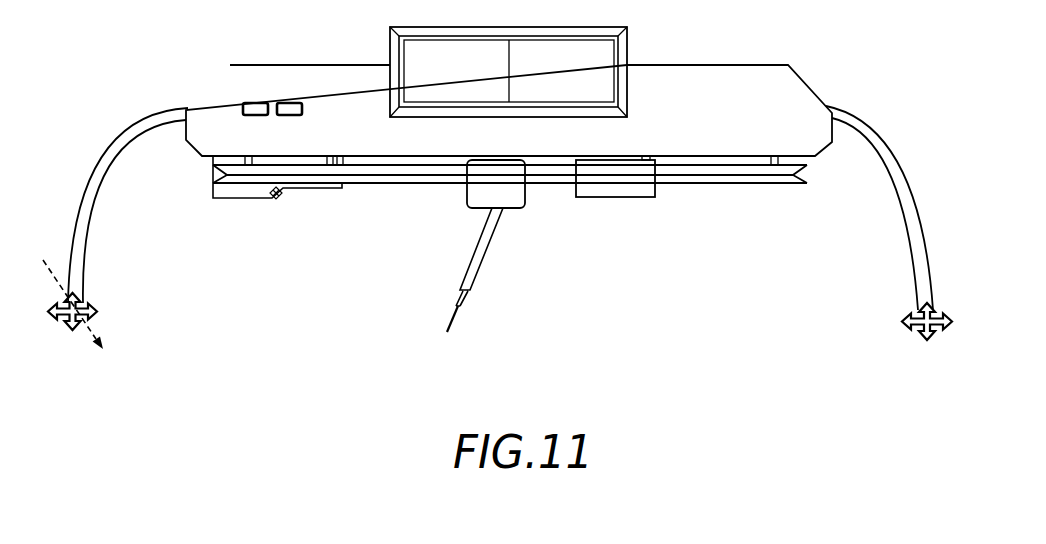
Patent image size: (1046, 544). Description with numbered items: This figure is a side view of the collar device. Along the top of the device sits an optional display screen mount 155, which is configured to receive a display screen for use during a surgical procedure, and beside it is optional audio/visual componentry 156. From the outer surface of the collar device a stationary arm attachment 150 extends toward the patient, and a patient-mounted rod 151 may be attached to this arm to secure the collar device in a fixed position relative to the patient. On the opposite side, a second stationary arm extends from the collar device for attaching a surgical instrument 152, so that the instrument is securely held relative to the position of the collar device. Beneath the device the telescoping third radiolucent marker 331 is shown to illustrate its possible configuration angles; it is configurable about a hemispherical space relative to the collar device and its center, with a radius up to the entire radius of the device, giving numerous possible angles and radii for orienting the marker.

The stationary arm attachment 150 is at (126, 120).
The patient-mounted rod 151 is at (100, 364).
The surgical instrument 152 is at (921, 195).
The display screen mount 155 is at (474, 82).
The audio/visual componentry 156 is at (310, 148).
The telescoping third radiolucent marker 331 is at (450, 323).